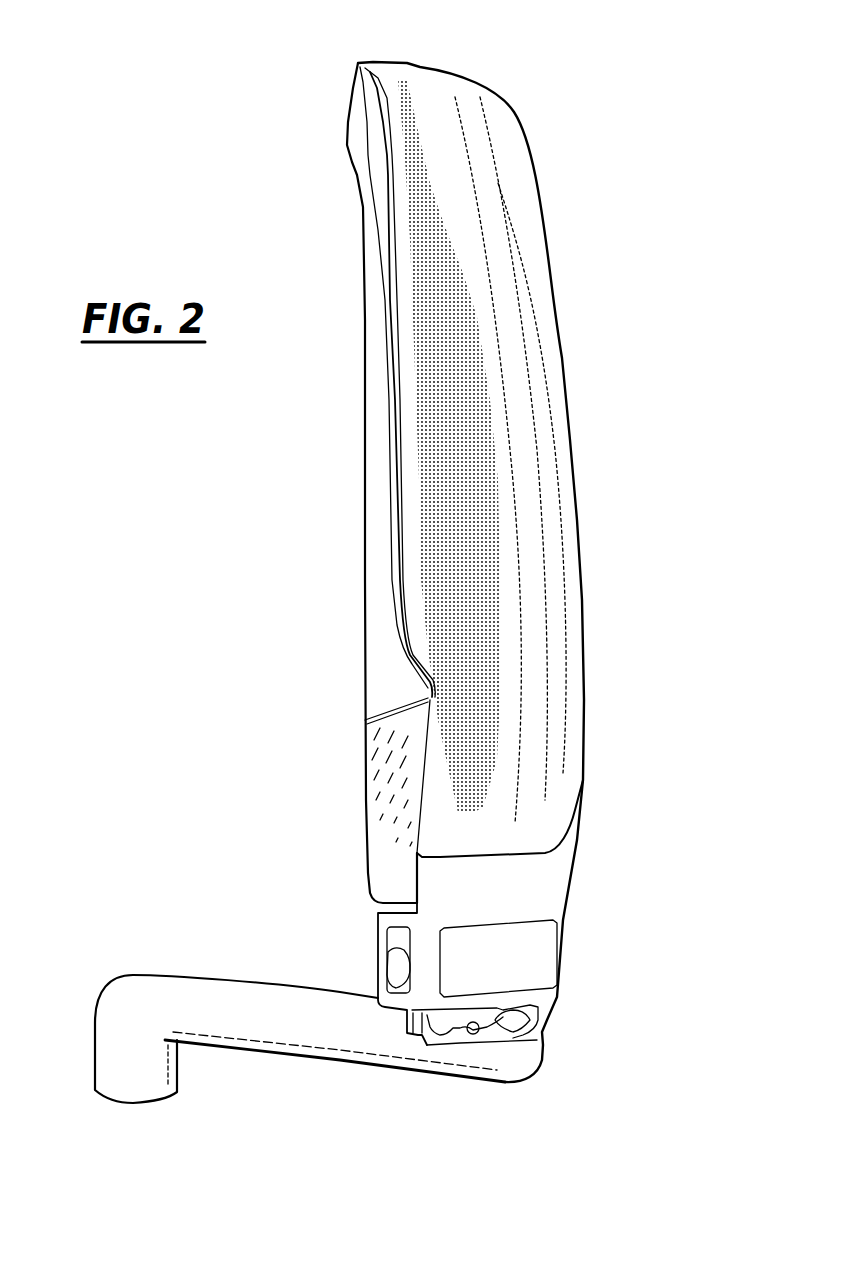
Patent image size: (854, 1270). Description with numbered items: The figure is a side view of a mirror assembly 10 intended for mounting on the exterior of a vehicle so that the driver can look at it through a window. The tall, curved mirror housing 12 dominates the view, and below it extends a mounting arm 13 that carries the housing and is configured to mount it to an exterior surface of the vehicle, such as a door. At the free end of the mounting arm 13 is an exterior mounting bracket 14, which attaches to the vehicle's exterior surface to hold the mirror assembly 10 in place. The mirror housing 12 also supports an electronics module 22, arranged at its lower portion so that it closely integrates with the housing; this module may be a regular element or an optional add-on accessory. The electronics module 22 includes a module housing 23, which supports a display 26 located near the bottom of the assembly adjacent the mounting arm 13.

The mirror assembly 10 is at (613, 135).
The mirror housing 12 is at (515, 327).
The mounting arm 13 is at (328, 1028).
The exterior mounting bracket 14 is at (128, 1077).
The electronics module 22 is at (584, 942).
The module housing 23 is at (540, 882).
The display 26 is at (540, 1040).